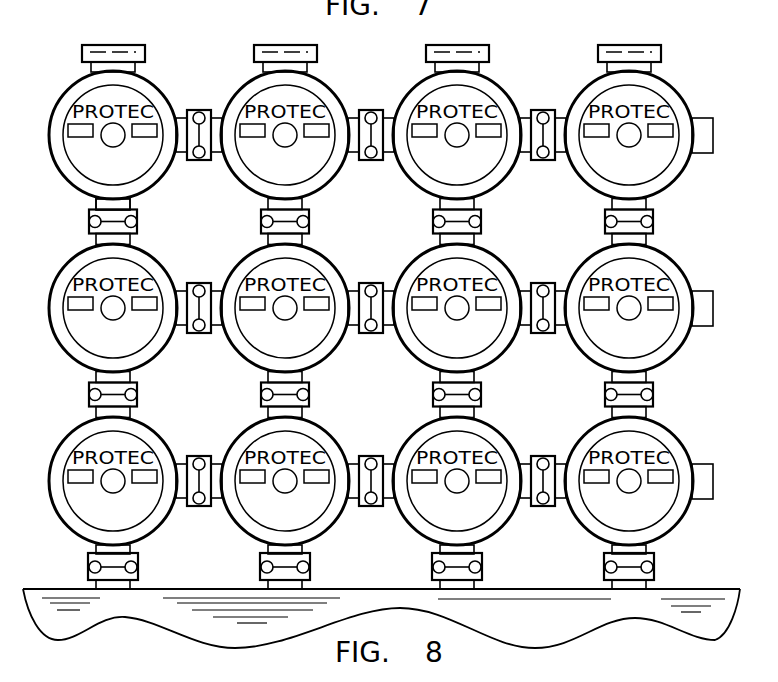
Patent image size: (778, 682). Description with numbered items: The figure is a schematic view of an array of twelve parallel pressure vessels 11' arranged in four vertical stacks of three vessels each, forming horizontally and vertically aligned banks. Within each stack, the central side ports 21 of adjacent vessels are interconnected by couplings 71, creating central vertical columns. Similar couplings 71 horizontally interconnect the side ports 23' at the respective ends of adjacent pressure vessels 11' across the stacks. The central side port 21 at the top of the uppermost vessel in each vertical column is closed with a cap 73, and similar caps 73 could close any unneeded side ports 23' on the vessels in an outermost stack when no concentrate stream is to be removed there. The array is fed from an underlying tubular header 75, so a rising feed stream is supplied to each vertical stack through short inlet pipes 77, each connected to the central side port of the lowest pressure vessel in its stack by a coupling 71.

The pressure vessel 11' is at (363, 308).
The cap 73 is at (371, 36).
The side port 23' is at (371, 308).
The coupling 71 is at (401, 367).
The central side port 21 is at (132, 202).
The inlet pipe 77 is at (371, 565).
The tubular header 75 is at (525, 630).